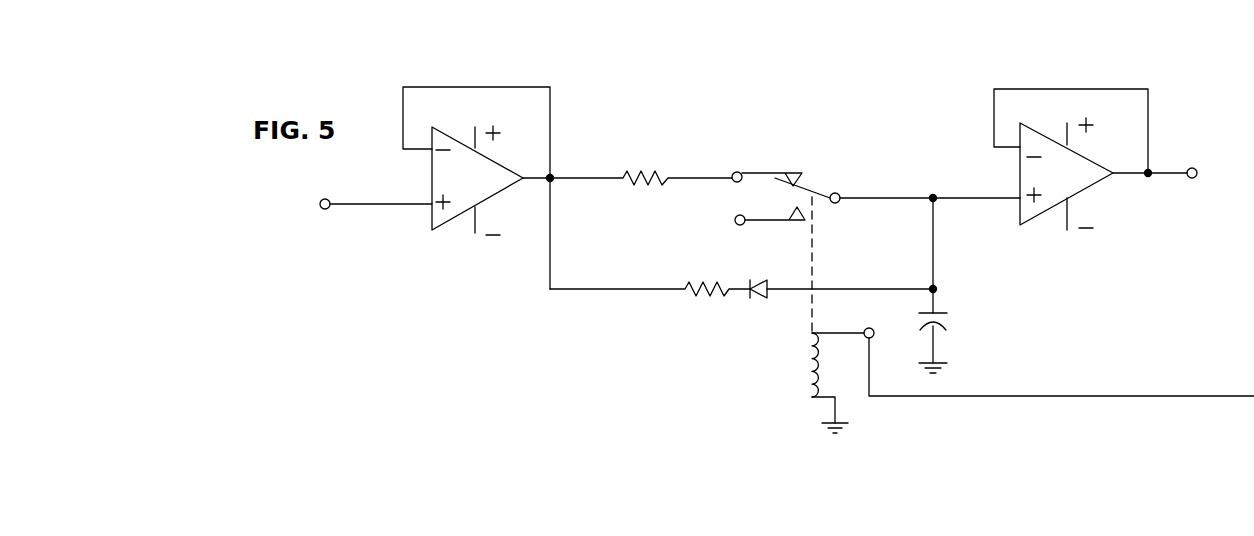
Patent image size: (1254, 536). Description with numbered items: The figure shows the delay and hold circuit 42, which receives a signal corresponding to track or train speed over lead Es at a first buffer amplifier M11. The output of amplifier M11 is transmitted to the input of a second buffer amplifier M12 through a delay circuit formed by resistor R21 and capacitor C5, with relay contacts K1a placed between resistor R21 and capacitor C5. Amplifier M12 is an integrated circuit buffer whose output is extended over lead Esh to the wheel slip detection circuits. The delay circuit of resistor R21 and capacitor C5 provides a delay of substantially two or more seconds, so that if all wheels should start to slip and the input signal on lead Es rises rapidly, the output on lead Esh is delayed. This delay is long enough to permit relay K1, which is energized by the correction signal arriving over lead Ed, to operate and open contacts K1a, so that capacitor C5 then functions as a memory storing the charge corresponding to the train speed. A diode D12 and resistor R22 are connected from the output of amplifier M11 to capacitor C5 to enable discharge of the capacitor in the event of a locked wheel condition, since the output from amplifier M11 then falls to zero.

The delay and hold circuit 42 is at (985, 55).
The lead Es is at (367, 204).
The first buffer amplifier M11 is at (477, 183).
The resistor R21 is at (657, 143).
The contacts K1a is at (806, 182).
The resistor R22 is at (702, 283).
The diode D12 is at (760, 297).
The capacitor C5 is at (946, 322).
The relay K1 is at (806, 371).
The lead Ed is at (1075, 396).
The buffer amplifier M12 is at (1088, 192).
The lead Esh is at (1178, 172).